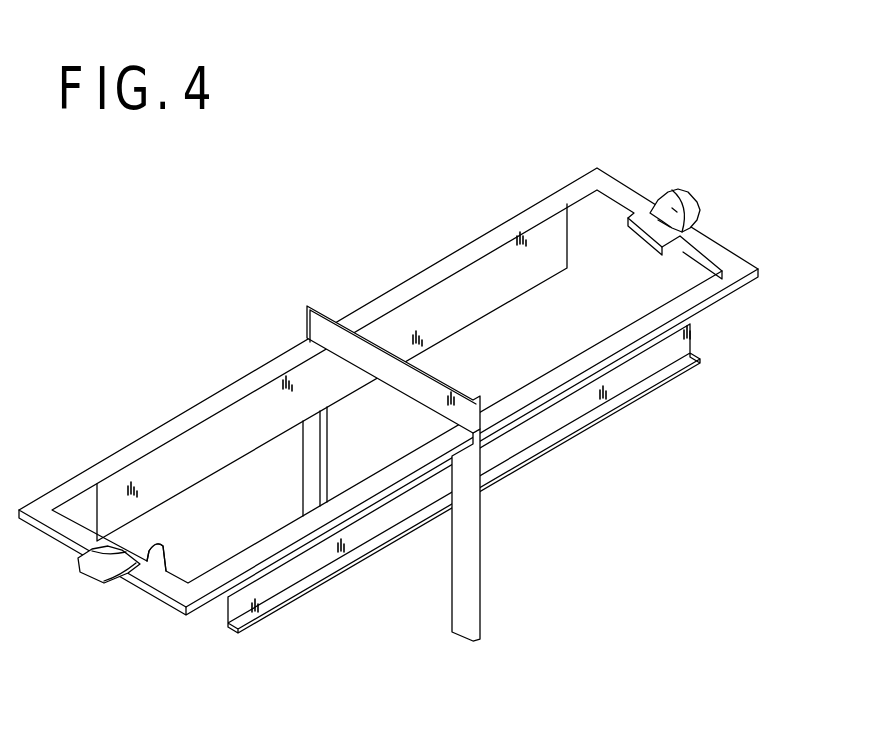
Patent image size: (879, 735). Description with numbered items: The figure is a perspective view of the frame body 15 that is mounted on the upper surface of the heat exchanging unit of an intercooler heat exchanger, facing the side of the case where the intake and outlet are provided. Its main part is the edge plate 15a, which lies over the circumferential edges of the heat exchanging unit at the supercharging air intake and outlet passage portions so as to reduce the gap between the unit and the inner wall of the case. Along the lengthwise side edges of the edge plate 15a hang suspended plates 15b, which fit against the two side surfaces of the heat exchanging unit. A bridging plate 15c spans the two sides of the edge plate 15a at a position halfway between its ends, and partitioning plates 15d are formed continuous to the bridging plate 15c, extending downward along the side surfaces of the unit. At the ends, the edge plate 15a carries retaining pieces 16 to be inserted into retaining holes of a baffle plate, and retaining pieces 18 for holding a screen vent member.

The frame body 15 is at (388, 406).
The edge plate 15a is at (457, 253).
The suspended plates 15b is at (193, 465).
The bridging plate 15c is at (437, 378).
The partitioning plates 15d is at (333, 452).
The retaining pieces 16 is at (693, 193).
The retaining pieces 18 is at (152, 548).